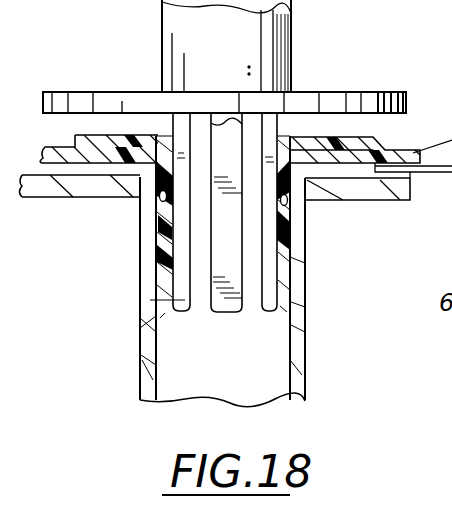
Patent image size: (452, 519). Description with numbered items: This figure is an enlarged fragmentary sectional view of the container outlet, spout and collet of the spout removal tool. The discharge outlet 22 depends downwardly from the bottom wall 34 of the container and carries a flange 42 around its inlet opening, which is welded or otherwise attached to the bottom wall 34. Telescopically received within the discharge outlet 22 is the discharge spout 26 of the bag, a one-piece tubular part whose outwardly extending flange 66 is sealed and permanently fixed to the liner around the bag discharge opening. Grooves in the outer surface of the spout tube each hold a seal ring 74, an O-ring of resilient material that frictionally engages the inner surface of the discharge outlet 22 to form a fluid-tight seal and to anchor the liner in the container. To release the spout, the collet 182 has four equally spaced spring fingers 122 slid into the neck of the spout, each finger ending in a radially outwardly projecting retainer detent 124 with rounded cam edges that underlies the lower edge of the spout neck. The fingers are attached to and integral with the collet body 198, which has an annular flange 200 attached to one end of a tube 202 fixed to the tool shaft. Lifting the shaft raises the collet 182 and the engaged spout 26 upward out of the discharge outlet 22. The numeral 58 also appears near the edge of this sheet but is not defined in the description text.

The collet body 198 is at (161, 32).
The tube 202 is at (291, 28).
The annular flange 200 is at (72, 68).
The collet 182 is at (343, 81).
The flange 66 is at (370, 136).
The bottom wall 34 is at (403, 200).
The discharge outlet 22 is at (305, 352).
The discharge spout 26 is at (290, 229).
The seal ring 74 is at (157, 243).
The spring fingers 122 is at (165, 274).
The retainer detent 124 is at (168, 313).
The element 58 is at (437, 343).
The flange 42 is at (451, 355).